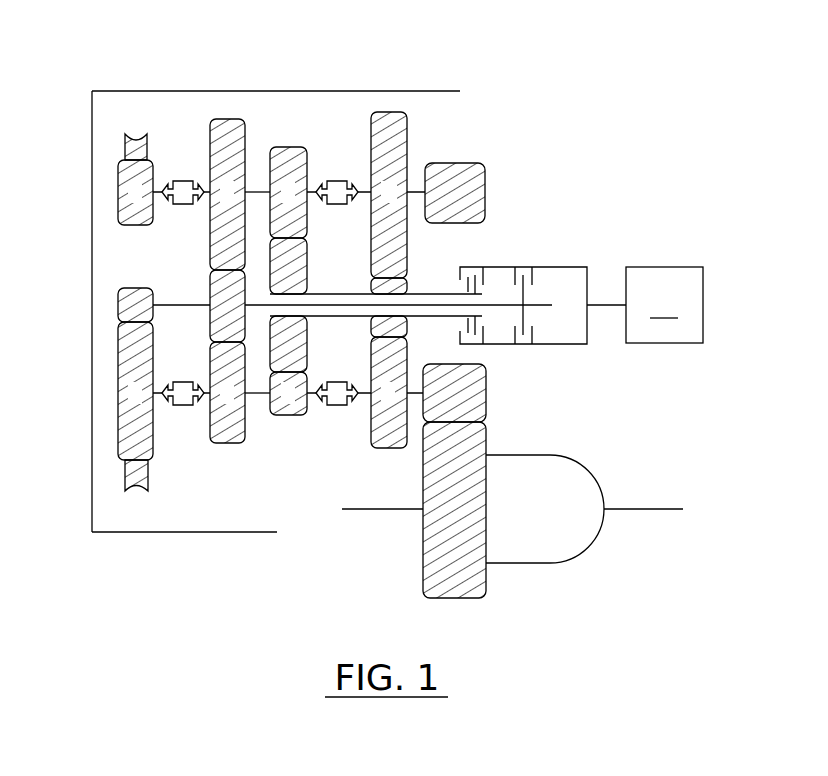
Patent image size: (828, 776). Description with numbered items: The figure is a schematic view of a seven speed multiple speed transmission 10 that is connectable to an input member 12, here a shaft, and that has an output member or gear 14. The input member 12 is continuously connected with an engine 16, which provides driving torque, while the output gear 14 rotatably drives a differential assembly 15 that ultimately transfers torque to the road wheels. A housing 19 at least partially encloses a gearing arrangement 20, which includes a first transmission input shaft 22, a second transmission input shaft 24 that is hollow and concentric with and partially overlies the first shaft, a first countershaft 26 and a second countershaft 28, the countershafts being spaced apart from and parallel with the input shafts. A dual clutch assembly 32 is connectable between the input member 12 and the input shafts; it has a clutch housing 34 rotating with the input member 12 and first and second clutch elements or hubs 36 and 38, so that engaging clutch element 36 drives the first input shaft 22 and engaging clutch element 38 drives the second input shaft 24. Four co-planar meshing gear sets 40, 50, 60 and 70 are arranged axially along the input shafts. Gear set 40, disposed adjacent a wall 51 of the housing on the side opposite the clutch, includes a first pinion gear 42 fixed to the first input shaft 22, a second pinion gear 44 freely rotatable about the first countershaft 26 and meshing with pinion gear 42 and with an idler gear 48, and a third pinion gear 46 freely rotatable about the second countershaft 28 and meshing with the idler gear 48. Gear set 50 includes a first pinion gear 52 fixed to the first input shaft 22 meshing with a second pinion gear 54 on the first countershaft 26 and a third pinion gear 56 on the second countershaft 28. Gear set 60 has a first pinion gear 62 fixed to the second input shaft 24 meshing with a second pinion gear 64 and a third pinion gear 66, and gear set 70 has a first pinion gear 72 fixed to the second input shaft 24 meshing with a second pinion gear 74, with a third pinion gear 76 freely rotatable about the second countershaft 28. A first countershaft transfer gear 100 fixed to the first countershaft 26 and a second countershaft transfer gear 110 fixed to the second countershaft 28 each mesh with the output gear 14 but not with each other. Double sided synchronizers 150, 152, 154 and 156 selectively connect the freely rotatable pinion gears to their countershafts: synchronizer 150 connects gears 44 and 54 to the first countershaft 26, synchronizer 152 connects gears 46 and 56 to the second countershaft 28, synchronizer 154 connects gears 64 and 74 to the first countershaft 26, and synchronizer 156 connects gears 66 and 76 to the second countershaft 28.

The multiple speed transmission 10 is at (646, 118).
The input member 12 is at (604, 303).
The output member or gear 14 is at (423, 565).
The differential assembly 15 is at (572, 444).
The engine 16 is at (664, 305).
The housing 19 is at (105, 91).
The gearing arrangement 20 is at (204, 507).
The first transmission input shaft 22 is at (177, 303).
The second transmission input shaft 24 is at (357, 318).
The first countershaft 26 is at (260, 395).
The second countershaft 28 is at (257, 190).
The dual clutch assembly 32 is at (524, 256).
The clutch housing 34 is at (588, 335).
The first clutch element or hub 36 is at (535, 276).
The second clutch element or hub 38 is at (467, 332).
The co-planar gear set 40 is at (134, 507).
The first pinion gear 42 is at (115, 300).
The second pinion gear 44 is at (118, 383).
The third pinion gear 46 is at (123, 203).
The idler gear 48 is at (127, 145).
The co-planar gear set 50 is at (229, 465).
The wall 51 is at (92, 333).
The first pinion gear 52 is at (200, 280).
The second pinion gear 54 is at (208, 375).
The third pinion gear 56 is at (223, 120).
The co-planar gear set 60 is at (288, 440).
The first pinion gear 62 is at (307, 282).
The second pinion gear 64 is at (307, 408).
The third pinion gear 66 is at (292, 147).
The co-planar gear set 70 is at (379, 474).
The first pinion gear 72 is at (370, 284).
The second pinion gear 74 is at (396, 450).
The third pinion gear 76 is at (390, 112).
The first countershaft transfer gear 100 is at (486, 405).
The second countershaft transfer gear 110 is at (477, 163).
The synchronizer assembly 150 is at (181, 405).
The synchronizer assembly 152 is at (178, 181).
The synchronizer assembly 154 is at (340, 407).
The synchronizer assembly 156 is at (340, 181).